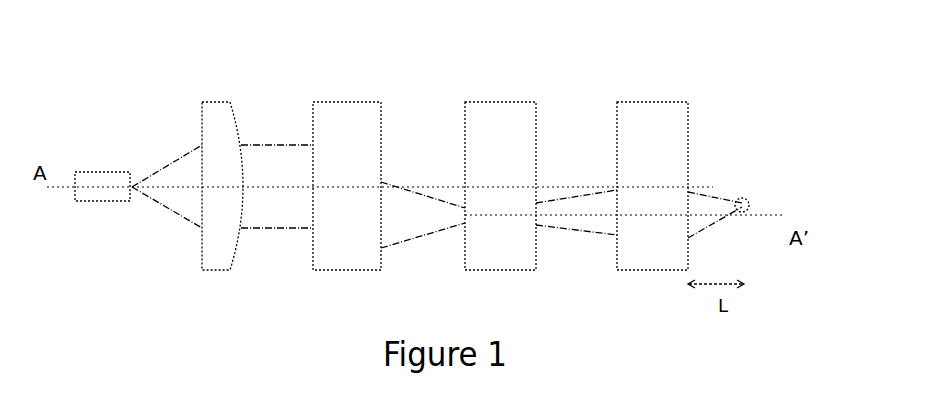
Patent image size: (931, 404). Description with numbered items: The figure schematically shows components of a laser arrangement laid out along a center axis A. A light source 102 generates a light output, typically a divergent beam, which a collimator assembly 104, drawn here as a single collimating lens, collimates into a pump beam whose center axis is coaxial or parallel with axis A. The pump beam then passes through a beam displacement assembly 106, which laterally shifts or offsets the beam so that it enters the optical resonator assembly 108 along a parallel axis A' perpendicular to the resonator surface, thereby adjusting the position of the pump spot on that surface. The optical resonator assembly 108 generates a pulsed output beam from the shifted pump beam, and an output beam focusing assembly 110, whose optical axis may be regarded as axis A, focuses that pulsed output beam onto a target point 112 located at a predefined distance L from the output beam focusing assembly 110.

The light source 102 is at (110, 177).
The collimator assembly 104 is at (203, 118).
The beam displacement assembly 106 is at (313, 115).
The optical resonator assembly 108 is at (468, 115).
The output beam focusing assembly 110 is at (620, 115).
The target point 112 is at (748, 199).